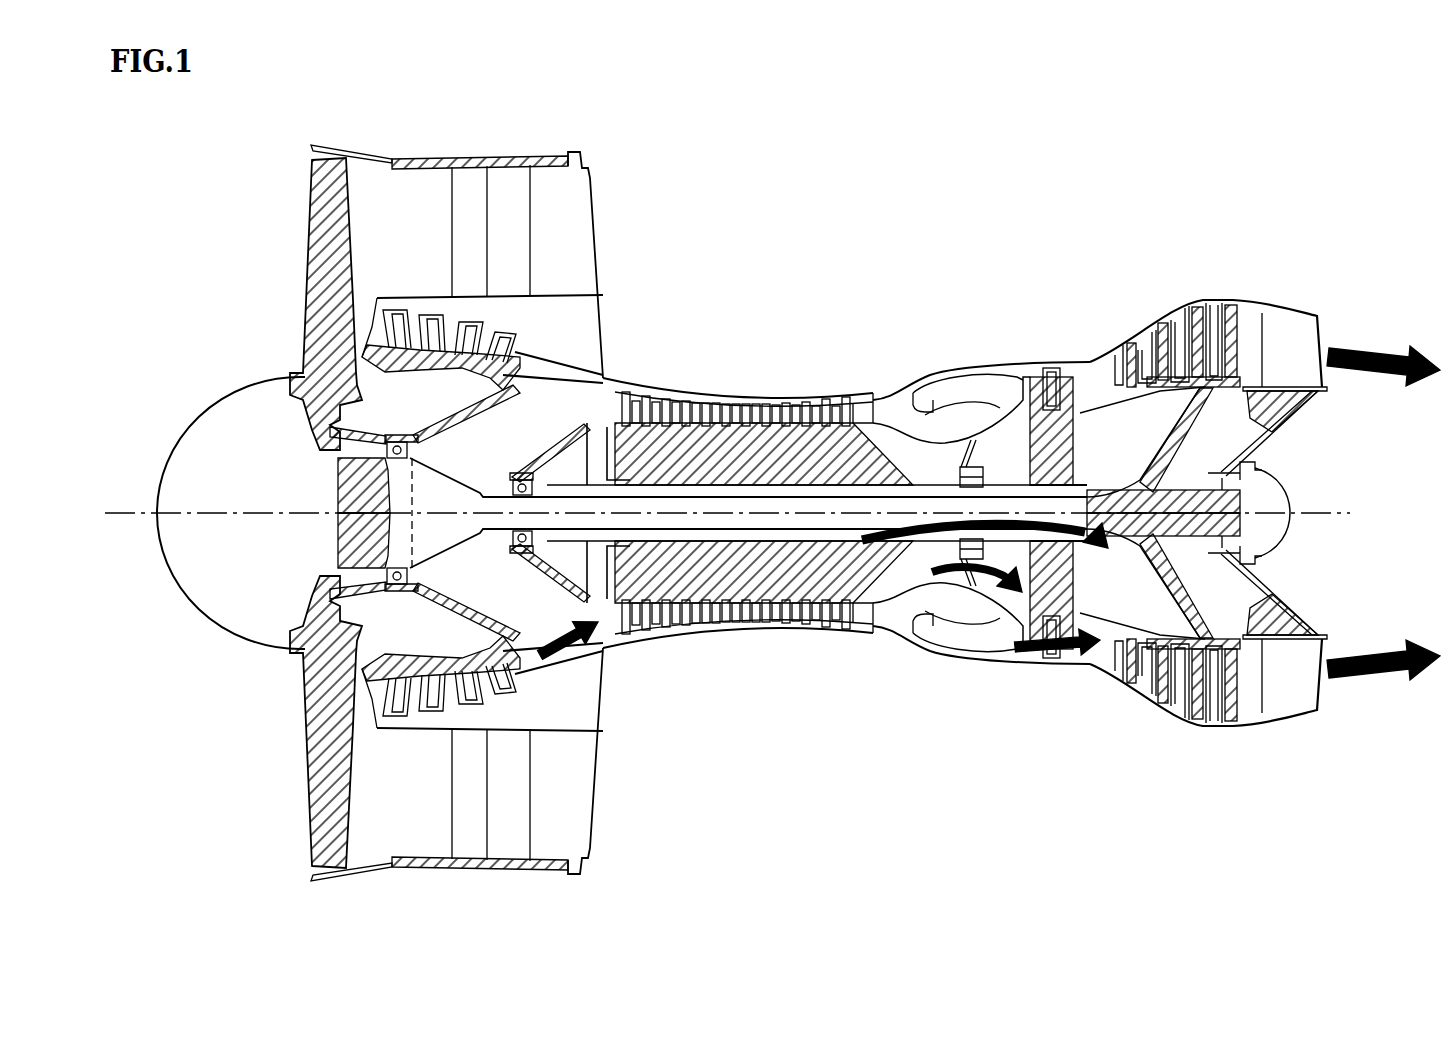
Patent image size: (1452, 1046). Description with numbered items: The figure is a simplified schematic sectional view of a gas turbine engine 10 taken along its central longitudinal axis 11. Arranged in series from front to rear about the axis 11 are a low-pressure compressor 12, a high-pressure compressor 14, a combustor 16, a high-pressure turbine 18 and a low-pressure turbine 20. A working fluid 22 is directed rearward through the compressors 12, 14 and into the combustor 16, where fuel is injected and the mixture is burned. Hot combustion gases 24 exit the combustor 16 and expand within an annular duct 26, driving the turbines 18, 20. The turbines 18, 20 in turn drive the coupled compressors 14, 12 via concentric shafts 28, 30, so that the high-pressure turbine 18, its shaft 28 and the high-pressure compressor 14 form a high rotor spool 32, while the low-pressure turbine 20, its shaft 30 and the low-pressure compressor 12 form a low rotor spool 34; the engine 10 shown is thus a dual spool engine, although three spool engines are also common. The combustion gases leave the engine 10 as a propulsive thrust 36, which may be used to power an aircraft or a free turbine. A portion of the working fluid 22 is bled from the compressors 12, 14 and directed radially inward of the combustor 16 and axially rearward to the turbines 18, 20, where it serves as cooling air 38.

The gas turbine engine 10 is at (1187, 133).
The central longitudinal axis 11 is at (133, 500).
The low-pressure compressor 12 is at (527, 143).
The high-pressure compressor 14 is at (663, 353).
The combustor 16 is at (957, 360).
The high-pressure turbine 18 is at (1050, 350).
The low-pressure turbine 20 is at (1180, 290).
The working fluid 22 is at (567, 643).
The hot combustion gases 24 is at (1080, 657).
The annular duct 26 is at (1095, 390).
The concentric shaft 28 is at (560, 447).
The concentric shaft 30 is at (433, 465).
The high rotor spool 32 is at (570, 588).
The low rotor spool 34 is at (473, 612).
The propulsive thrust 36 is at (1355, 342).
The cooling air 38 is at (1075, 555).